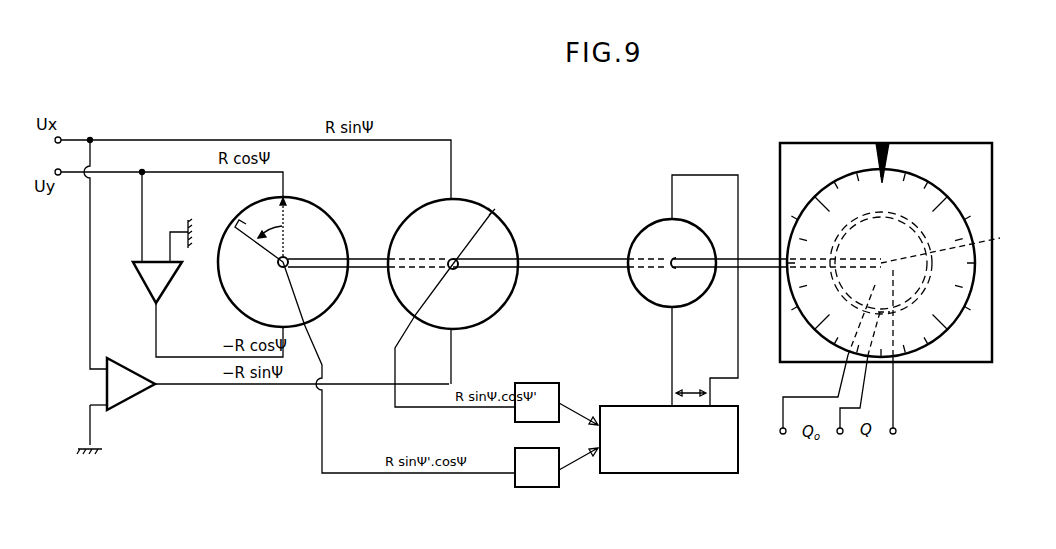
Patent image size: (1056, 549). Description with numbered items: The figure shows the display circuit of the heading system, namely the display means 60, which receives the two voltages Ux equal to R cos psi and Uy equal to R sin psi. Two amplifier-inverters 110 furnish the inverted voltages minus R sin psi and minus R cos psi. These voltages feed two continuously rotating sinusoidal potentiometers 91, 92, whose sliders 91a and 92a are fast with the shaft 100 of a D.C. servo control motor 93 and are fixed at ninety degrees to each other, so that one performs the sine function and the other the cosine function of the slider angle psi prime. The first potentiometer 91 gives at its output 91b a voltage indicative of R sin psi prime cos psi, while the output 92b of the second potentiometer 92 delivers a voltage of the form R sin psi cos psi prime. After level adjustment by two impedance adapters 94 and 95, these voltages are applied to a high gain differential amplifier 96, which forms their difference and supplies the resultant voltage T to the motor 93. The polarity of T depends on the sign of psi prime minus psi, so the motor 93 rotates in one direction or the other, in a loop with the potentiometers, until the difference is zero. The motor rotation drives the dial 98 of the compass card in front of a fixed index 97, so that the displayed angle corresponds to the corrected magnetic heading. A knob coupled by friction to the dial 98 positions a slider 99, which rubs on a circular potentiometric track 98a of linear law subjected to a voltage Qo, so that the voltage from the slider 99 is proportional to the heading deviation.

The display means 60 is at (979, 142).
The first potentiometer 91 is at (344, 214).
The slider of the first potentiometer 91a is at (263, 254).
The output of the first potentiometer 91b is at (322, 347).
The second potentiometer 92 is at (507, 215).
The slider of the second potentiometer 92a is at (470, 238).
The output of the second potentiometer 92b is at (397, 366).
The D.C. servo control motor 93 is at (636, 236).
The impedance adapter 94 is at (556, 404).
The impedance adapter 95 is at (556, 467).
The high gain differential amplifier 96 is at (669, 439).
The fixed index 97 is at (890, 154).
The dial of the compass card 98 is at (951, 196).
The circular potentiometric track 98a is at (957, 245).
The slider 99 is at (916, 251).
The shaft 100 is at (381, 256).
The amplifier-inverters 110 is at (142, 278).